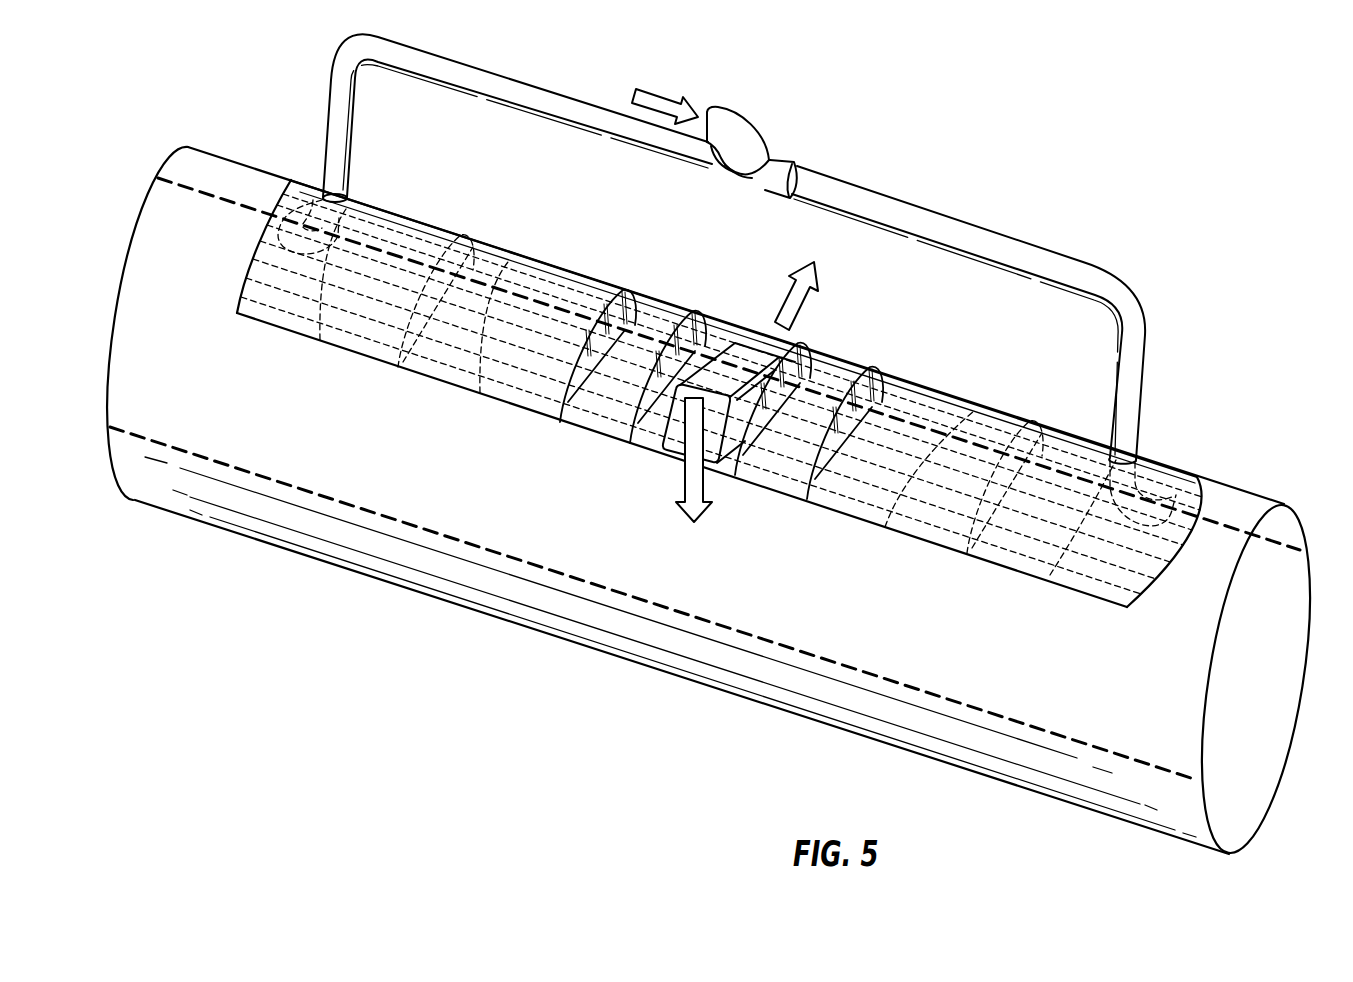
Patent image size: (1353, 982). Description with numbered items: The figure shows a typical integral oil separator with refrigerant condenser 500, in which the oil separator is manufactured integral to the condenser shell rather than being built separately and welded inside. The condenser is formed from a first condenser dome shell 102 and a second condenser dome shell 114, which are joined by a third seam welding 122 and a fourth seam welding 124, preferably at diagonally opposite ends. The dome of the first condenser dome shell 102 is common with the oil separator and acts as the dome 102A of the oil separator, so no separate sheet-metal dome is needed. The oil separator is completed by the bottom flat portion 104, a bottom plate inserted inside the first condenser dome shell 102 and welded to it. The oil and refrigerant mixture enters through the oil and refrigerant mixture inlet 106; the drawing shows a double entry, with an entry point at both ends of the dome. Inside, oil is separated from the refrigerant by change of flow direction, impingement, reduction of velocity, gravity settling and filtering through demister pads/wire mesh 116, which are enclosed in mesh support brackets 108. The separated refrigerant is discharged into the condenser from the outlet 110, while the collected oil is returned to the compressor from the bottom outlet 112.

The first condenser dome shell 102 is at (710, 482).
The dome of the oil separator 102A is at (392, 208).
The oil separator bottom portion/plate 104 is at (335, 345).
The oil and refrigerant mixture inlet 106 is at (728, 122).
The mesh support brackets 108 is at (838, 430).
The outlet 110 is at (690, 522).
The bottom outlet 112 is at (782, 298).
The second condenser dome shell 114 is at (190, 517).
The demister pads/wire mesh 116 is at (668, 305).
The third seam welding 122 is at (1130, 762).
The fourth seam welding 124 is at (1230, 528).
The integral oil separator with refrigerant condenser 500 is at (1162, 127).